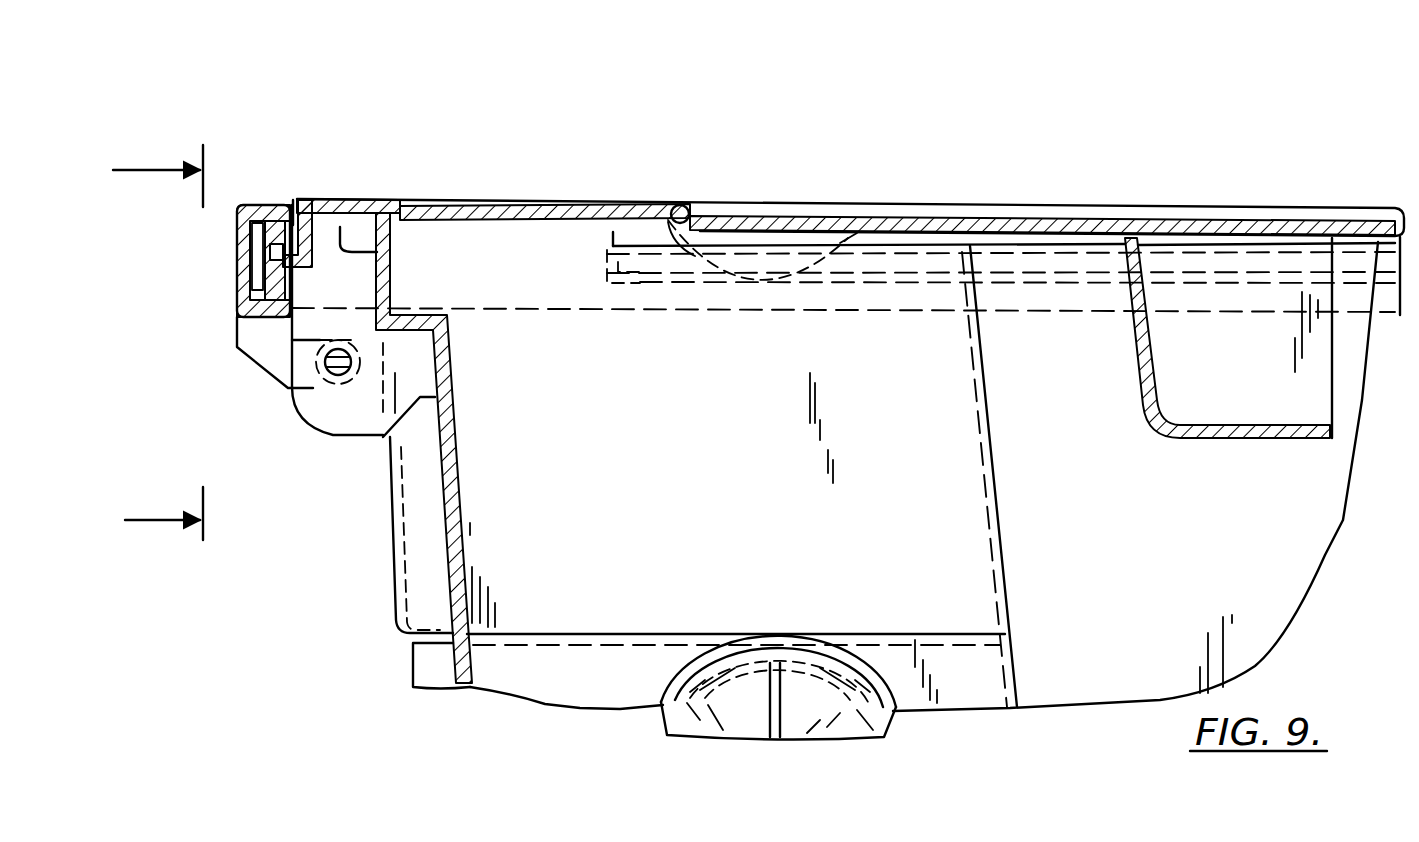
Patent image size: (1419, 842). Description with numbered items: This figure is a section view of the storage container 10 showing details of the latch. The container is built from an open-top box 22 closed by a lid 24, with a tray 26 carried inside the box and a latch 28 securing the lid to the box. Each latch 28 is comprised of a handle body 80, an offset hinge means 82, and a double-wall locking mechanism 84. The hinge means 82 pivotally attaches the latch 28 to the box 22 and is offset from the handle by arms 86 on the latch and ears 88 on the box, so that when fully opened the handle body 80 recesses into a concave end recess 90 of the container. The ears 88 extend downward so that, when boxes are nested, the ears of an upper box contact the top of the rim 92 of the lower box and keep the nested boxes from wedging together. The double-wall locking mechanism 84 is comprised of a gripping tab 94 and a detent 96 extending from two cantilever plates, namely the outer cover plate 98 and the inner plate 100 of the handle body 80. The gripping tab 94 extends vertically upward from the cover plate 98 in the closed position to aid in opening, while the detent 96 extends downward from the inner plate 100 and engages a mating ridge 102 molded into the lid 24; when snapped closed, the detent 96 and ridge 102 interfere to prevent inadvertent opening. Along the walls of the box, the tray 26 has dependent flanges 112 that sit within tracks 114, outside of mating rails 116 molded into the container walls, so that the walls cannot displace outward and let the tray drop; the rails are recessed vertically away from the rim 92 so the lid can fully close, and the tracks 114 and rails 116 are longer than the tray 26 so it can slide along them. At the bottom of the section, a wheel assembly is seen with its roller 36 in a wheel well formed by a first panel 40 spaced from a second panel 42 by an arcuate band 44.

The storage container 10 is at (158, 344).
The open-top box 22 is at (392, 612).
The lid 24 is at (901, 194).
The tray 26 is at (1162, 441).
The latch 28 is at (199, 361).
The roller 36 is at (677, 724).
The first panel 40 is at (807, 683).
The second panel 42 is at (614, 655).
The arcuate band 44 is at (683, 663).
The handle body 80 is at (229, 332).
The offset hinge means 82 is at (333, 377).
The double-wall locking mechanism 84 is at (300, 191).
The arms 86 is at (257, 352).
The ears 88 is at (347, 423).
The end recess 90 is at (420, 524).
The rim 92 is at (388, 239).
The gripping tab 94 is at (284, 200).
The detent 96 is at (312, 200).
The outer cover plate 98 is at (257, 203).
The inner plate 100 is at (237, 258).
The mating ridge 102 is at (237, 280).
The dependent flanges 112 is at (1304, 262).
The tracks 114 is at (1032, 262).
The mating rails 116 is at (667, 263).